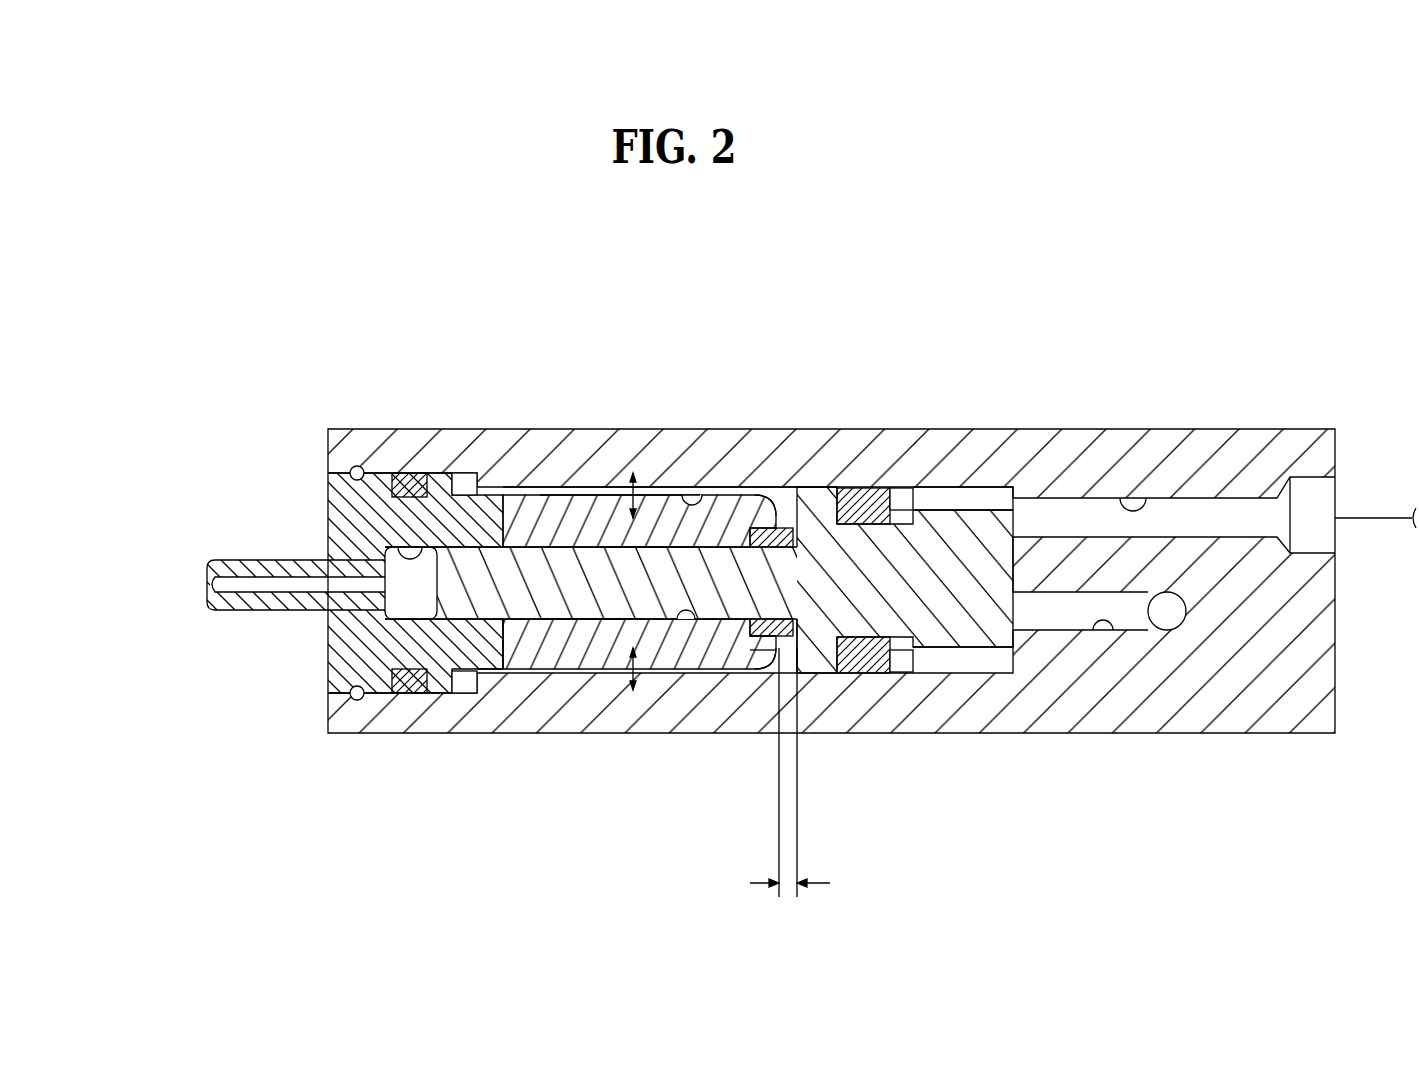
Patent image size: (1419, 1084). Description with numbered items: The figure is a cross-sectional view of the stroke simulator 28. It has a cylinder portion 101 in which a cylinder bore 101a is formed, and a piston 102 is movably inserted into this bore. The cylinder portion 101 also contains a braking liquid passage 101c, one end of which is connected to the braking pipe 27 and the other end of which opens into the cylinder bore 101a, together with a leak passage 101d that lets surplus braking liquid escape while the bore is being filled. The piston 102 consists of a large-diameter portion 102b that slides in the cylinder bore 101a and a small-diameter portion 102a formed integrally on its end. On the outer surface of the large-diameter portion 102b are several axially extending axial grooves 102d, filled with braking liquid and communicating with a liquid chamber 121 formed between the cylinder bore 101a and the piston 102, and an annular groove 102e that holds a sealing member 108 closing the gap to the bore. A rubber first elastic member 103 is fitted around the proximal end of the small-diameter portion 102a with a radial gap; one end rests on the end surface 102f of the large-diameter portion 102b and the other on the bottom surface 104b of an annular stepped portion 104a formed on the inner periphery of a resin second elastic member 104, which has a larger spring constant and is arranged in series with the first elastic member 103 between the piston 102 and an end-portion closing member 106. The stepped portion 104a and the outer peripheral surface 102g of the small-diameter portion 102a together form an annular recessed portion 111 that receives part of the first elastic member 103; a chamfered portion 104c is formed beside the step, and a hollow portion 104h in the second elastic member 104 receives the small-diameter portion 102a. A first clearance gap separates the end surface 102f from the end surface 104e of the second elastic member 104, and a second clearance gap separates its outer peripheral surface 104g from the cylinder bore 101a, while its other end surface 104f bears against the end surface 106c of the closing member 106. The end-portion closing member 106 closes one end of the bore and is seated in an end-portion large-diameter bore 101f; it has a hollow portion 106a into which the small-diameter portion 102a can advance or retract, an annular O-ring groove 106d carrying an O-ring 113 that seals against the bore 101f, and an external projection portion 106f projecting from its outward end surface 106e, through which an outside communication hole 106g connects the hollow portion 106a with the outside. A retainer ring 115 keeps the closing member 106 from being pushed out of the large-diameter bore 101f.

The braking pipe 27 is at (1372, 516).
The stroke simulator 28 is at (303, 288).
The cylinder portion 101 is at (1250, 425).
The cylinder bore 101a is at (680, 492).
The braking liquid passage 101c is at (1137, 497).
The leak passage 101d is at (1103, 634).
The end-portion large-diameter bore 101f is at (330, 668).
The piston 102 is at (935, 548).
The small-diameter portion 102a is at (583, 619).
The large-diameter portion 102b is at (817, 500).
The axial grooves 102d is at (992, 508).
The annular groove 102e is at (858, 660).
The end surface 102f is at (800, 662).
The outer peripheral surface 102g is at (646, 545).
The first elastic member 103 is at (783, 528).
The second elastic member 104 is at (511, 492).
The annular stepped portion 104a is at (765, 518).
The bottom surface 104b is at (774, 658).
The chamfered portion 104c is at (766, 642).
The end surface 104e is at (784, 640).
The end surface 104f is at (462, 694).
The outer peripheral surface 104g is at (562, 510).
The hollow portion 104h is at (684, 620).
The end-portion closing member 106 is at (447, 476).
The hollow portion 106a is at (387, 478).
The end surface 106c is at (520, 672).
The annular O-ring groove 106d is at (416, 694).
The end surface 106e is at (328, 528).
The external projection portion 106f is at (233, 560).
The outside communication hole 106g is at (220, 585).
The sealing member 108 is at (875, 500).
The annular recessed portion 111 is at (756, 652).
The O-ring 113 is at (418, 478).
The retainer ring 115 is at (357, 701).
The liquid chamber 121 is at (1022, 523).